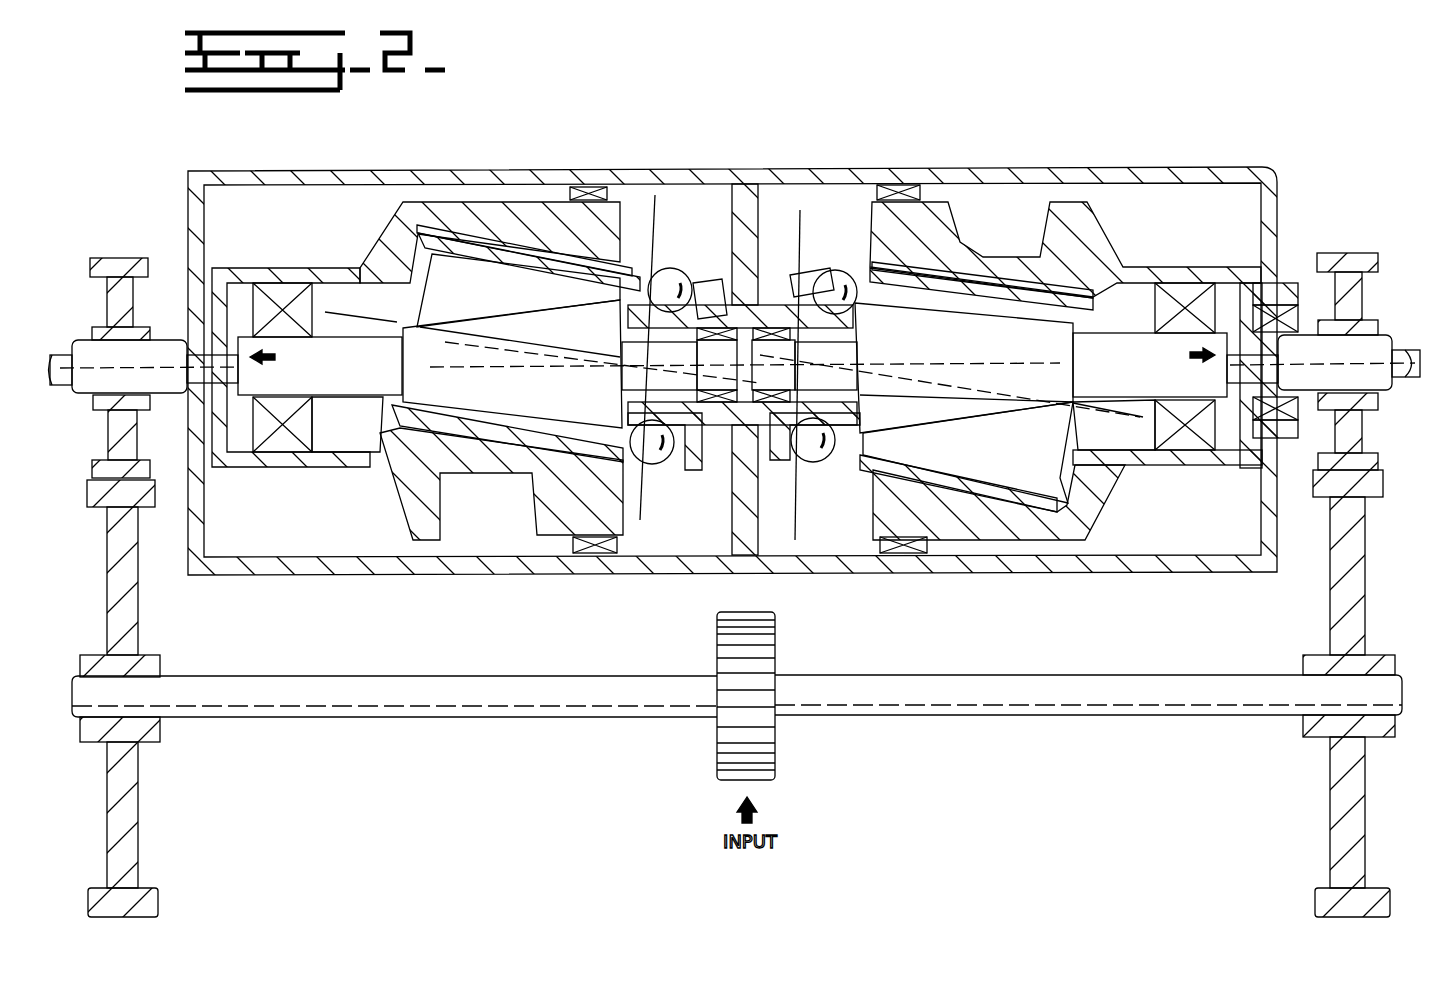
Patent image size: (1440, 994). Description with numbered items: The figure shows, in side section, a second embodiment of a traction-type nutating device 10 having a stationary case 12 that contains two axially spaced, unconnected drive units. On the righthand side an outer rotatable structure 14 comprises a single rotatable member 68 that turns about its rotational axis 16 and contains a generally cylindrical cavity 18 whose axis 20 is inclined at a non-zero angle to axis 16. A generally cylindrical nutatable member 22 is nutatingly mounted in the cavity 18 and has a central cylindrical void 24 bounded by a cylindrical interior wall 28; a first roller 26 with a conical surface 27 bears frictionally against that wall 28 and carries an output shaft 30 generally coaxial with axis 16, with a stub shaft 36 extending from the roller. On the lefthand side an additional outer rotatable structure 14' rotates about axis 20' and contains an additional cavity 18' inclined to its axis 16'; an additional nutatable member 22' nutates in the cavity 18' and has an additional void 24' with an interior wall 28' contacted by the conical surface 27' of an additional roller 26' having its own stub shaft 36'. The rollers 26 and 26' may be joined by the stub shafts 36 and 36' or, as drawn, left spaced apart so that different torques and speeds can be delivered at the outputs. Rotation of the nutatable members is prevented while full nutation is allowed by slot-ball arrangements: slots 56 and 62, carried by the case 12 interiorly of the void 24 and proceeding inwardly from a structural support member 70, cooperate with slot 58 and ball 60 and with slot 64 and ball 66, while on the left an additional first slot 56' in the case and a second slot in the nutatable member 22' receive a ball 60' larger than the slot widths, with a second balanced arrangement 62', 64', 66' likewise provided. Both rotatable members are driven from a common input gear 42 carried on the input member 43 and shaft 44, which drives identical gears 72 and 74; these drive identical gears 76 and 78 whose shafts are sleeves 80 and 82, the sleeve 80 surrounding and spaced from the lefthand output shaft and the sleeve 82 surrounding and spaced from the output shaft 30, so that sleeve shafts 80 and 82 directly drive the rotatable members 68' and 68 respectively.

The nutating device 10 is at (1260, 152).
The case 12 is at (1167, 170).
The outer rotatable structure 14 is at (986, 169).
The additional outer rotatable structure 14' is at (369, 170).
The rotational axis 16 is at (1256, 375).
The axis of the additional rotatable structure 16' is at (306, 367).
The cylindrical cavity 18 is at (981, 267).
The additional cylindrical cavity 18' is at (528, 215).
The axis of the cavity 20 is at (1108, 427).
The axis of the additional cavity 20' is at (361, 305).
The nutatable member 22 is at (978, 510).
The additional nutatable member 22' is at (501, 490).
The central cylindrical void 24 is at (968, 452).
The additional central cylindrical void 24' is at (518, 290).
The first roller 26 is at (964, 368).
The additional conically surfaced roller 26' is at (512, 364).
The conical surface 27 is at (979, 270).
The conical surface of additional roller 27' is at (561, 292).
The cylindrical interior wall 28 is at (958, 528).
The additional cylindrical interior wall 28' is at (507, 458).
The output shaft 30 is at (70, 385).
The stub shaft 36 is at (950, 373).
The additional stub shaft 36' is at (602, 350).
The input gear 42 is at (775, 752).
The input shaft 43 is at (628, 678).
The shaft 44 is at (866, 716).
The first slot 56 is at (801, 266).
The additional first slot 56' is at (650, 245).
The second slot 58 is at (660, 270).
The ball 60 is at (865, 303).
The ball 60' is at (687, 272).
The slot 62 is at (745, 377).
The additional slot 62' is at (710, 389).
The slot 64 is at (815, 465).
The additional slot 64' is at (702, 506).
The ball 66 is at (882, 442).
The ball 66' is at (665, 466).
The rotatable member 68 is at (1065, 241).
The additional rotatable member 68' is at (490, 208).
The structural support member 70 is at (760, 222).
The gear 72 is at (140, 632).
The gear 74 is at (1365, 605).
The gear 76 is at (118, 258).
The gear 78 is at (1342, 253).
The sleeve 80 is at (130, 371).
The sleeve 82 is at (1318, 366).